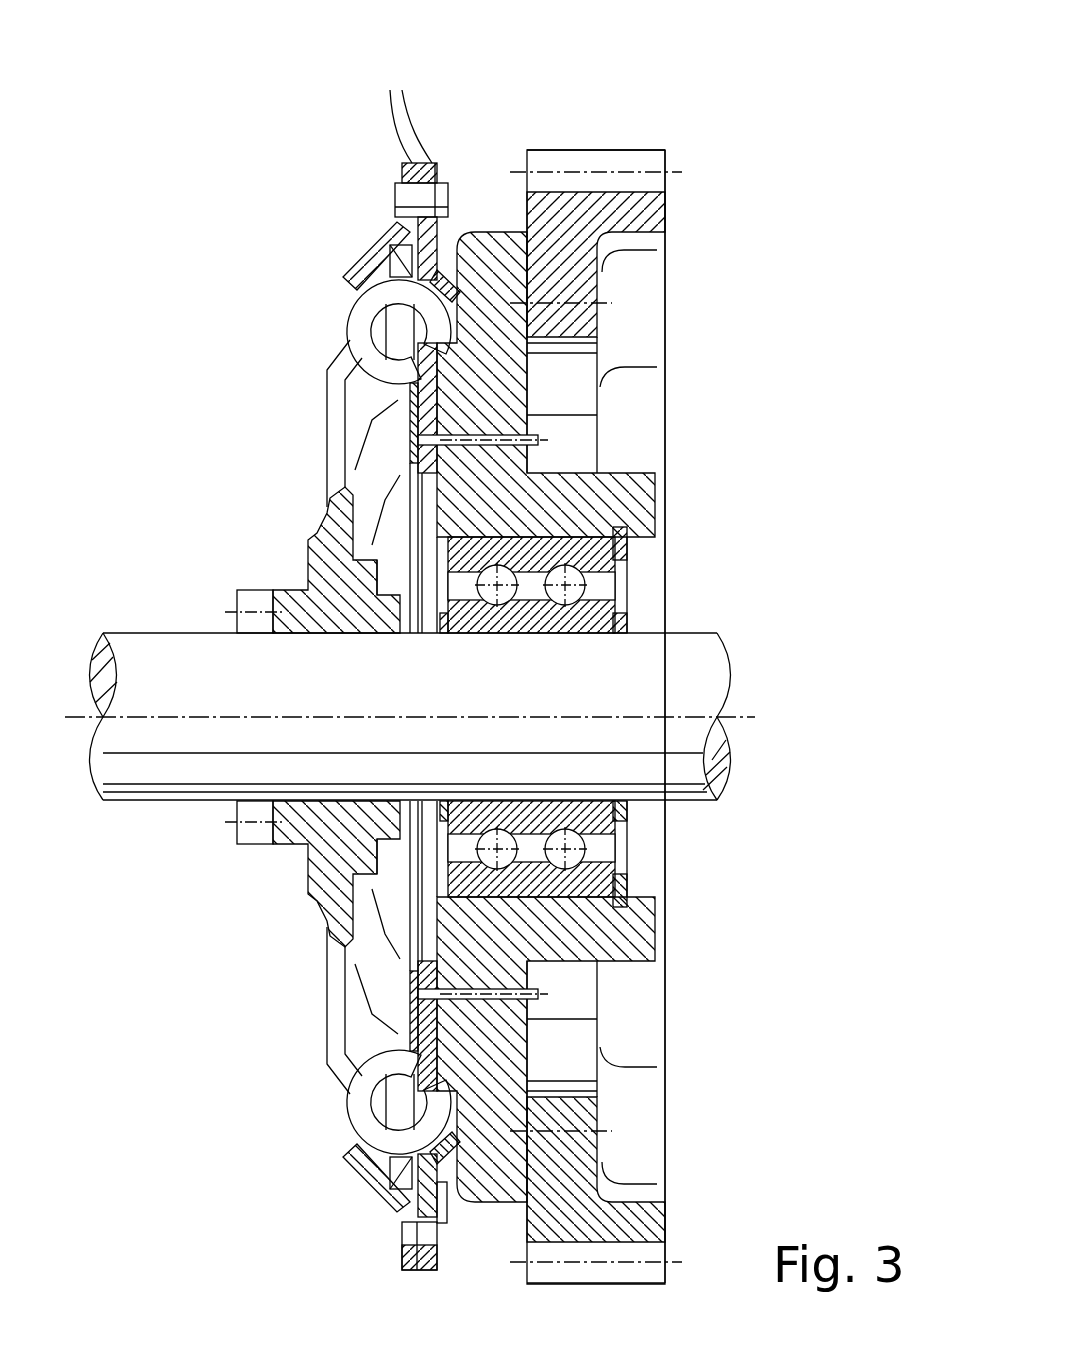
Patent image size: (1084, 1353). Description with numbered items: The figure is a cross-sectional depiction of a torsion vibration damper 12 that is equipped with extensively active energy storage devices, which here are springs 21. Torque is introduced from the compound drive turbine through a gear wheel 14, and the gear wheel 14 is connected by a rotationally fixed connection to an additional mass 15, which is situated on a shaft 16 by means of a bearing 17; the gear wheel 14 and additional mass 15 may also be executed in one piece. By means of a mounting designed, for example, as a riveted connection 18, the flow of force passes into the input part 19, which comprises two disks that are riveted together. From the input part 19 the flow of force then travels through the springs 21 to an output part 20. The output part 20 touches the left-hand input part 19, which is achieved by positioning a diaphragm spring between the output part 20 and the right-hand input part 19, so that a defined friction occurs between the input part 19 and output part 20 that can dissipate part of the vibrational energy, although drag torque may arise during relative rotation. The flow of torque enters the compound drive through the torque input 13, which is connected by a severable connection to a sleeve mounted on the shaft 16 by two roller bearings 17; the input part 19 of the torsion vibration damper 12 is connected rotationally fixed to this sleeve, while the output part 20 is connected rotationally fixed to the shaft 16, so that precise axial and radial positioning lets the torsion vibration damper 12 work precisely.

The torsion vibration damper 12 is at (283, 428).
The torque input 13 is at (615, 100).
The gear wheel 14 is at (645, 210).
The additional mass 15 is at (613, 502).
The shaft 16 is at (568, 691).
The bearing 17 is at (597, 611).
The riveted connection 18 is at (534, 448).
The input part 19 is at (415, 659).
The output part 20 is at (318, 550).
The springs 21 is at (357, 323).